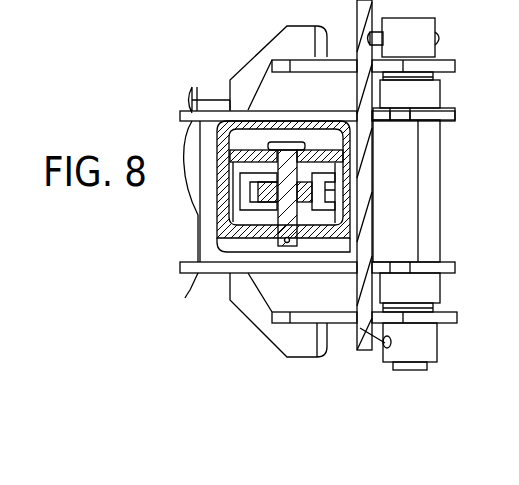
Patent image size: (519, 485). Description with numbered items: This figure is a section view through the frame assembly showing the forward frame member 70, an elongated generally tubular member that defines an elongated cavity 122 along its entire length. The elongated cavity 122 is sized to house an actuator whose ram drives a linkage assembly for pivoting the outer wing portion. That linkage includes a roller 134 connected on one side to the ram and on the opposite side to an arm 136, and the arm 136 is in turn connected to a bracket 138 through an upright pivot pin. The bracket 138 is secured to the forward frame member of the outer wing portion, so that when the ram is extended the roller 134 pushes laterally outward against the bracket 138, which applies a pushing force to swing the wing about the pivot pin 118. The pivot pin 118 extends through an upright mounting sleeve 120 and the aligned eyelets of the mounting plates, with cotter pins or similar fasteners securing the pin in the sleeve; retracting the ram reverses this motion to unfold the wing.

The forward frame member 70 is at (217, 143).
The pivot pin 118 is at (407, 370).
The upright mounting sleeve 120 is at (433, 205).
The elongated cavity 122 is at (257, 247).
The roller 134 is at (322, 228).
The arm 136 is at (303, 200).
The bracket 138 is at (322, 194).